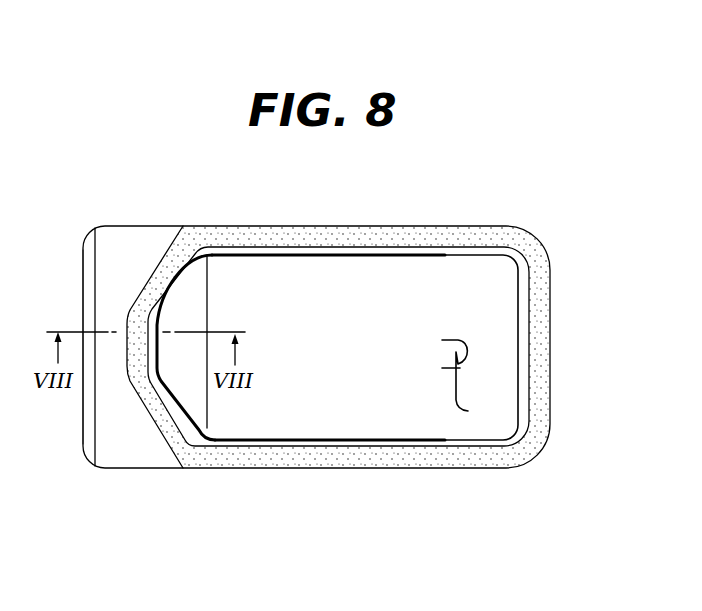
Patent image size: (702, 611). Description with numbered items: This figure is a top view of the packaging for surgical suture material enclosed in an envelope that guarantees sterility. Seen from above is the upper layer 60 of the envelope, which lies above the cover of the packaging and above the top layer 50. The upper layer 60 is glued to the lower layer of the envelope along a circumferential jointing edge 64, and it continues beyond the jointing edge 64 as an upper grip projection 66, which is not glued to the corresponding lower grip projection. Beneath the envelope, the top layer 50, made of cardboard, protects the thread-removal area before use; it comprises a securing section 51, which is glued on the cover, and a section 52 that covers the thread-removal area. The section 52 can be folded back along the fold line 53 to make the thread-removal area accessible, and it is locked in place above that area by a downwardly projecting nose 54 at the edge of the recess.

The top layer 50 is at (403, 415).
The securing section 51 is at (197, 405).
The section 52 is at (428, 310).
The fold line 53 is at (207, 322).
The nose 54 is at (473, 383).
The upper layer 60 is at (122, 455).
The jointing edge 64 is at (338, 232).
The upper grip projection 66 is at (122, 246).